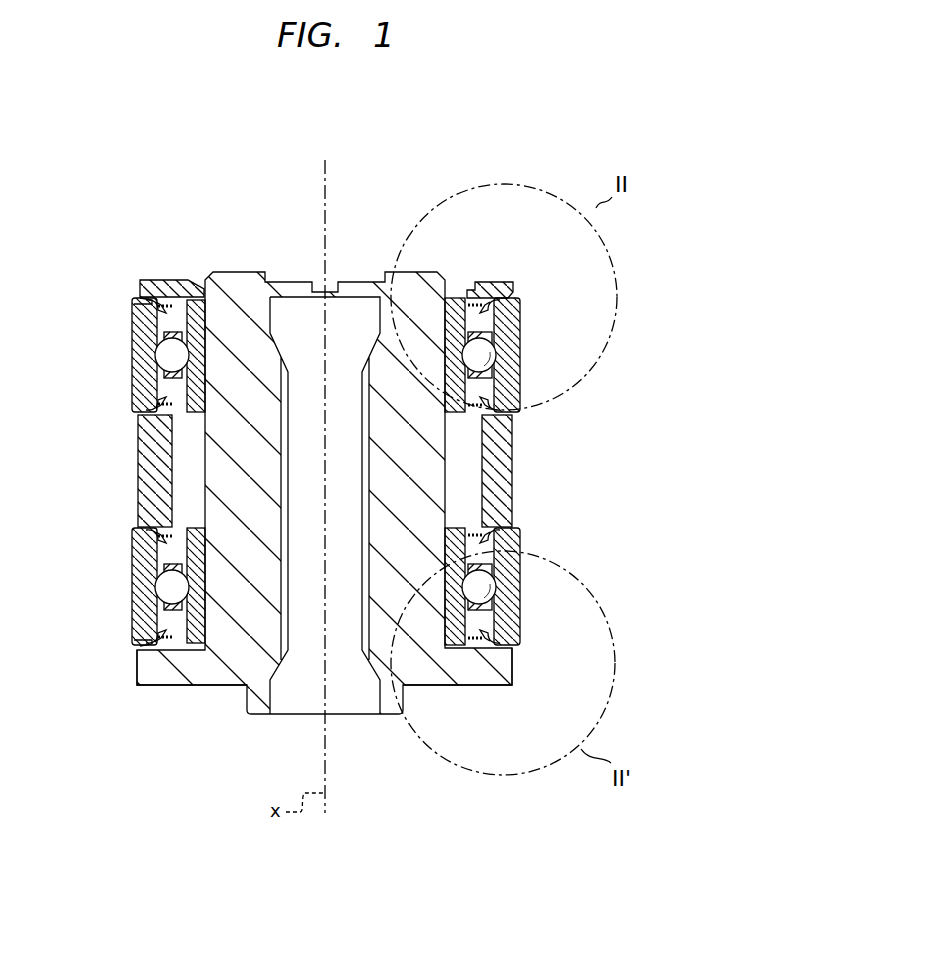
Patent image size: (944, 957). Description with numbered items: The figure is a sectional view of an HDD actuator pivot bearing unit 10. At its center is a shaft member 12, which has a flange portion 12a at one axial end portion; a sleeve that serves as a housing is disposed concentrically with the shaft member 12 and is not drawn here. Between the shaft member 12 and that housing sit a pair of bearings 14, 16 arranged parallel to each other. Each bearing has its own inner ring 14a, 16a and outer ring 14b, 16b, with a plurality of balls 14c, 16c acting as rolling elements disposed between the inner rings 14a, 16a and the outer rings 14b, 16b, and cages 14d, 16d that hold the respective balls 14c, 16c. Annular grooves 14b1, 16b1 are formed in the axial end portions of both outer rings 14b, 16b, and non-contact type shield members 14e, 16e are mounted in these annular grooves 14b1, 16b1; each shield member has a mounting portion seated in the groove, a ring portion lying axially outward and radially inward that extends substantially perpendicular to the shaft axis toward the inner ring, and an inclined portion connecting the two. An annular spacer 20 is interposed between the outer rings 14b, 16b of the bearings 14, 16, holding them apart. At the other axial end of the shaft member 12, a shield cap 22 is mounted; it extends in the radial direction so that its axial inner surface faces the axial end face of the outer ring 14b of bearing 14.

The pivot bearing unit 10 is at (355, 464).
The shaft member 12 is at (241, 283).
The flange portion 12a is at (165, 679).
The bearing 14 is at (355, 339).
The inner ring 14a is at (452, 325).
The outer ring 14b is at (492, 344).
The annular groove 14b1 is at (134, 304).
The balls 14c is at (490, 378).
The cage 14d is at (512, 328).
The shield member 14e is at (482, 304).
The bearing 16 is at (352, 612).
The inner ring 16a is at (453, 648).
The outer ring 16b is at (488, 582).
The annular groove 16b1 is at (134, 640).
The balls 16c is at (470, 556).
The cage 16d is at (495, 617).
The shield member 16e is at (482, 530).
The annular spacer 20 is at (140, 466).
The shield cap 22 is at (162, 282).